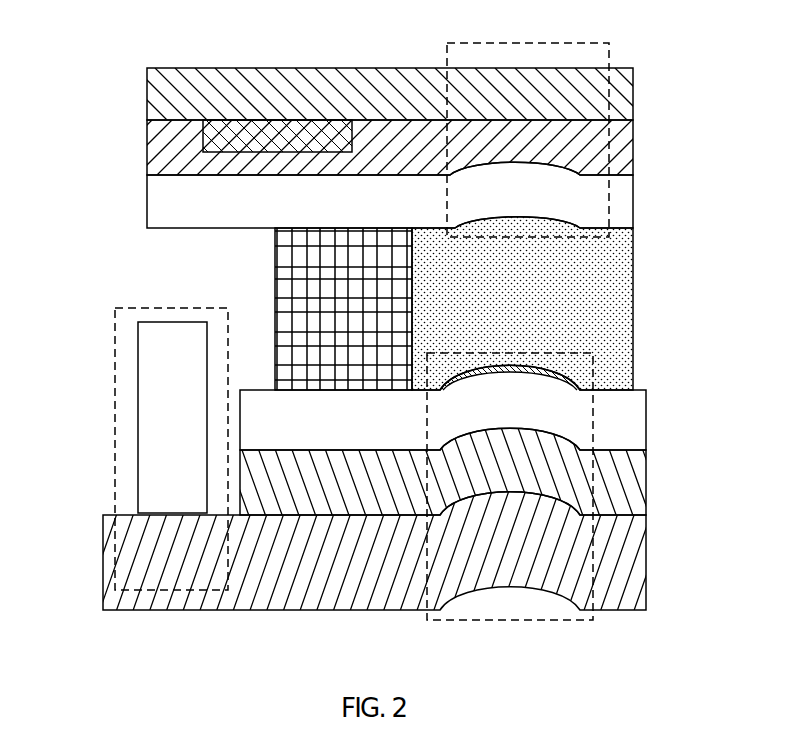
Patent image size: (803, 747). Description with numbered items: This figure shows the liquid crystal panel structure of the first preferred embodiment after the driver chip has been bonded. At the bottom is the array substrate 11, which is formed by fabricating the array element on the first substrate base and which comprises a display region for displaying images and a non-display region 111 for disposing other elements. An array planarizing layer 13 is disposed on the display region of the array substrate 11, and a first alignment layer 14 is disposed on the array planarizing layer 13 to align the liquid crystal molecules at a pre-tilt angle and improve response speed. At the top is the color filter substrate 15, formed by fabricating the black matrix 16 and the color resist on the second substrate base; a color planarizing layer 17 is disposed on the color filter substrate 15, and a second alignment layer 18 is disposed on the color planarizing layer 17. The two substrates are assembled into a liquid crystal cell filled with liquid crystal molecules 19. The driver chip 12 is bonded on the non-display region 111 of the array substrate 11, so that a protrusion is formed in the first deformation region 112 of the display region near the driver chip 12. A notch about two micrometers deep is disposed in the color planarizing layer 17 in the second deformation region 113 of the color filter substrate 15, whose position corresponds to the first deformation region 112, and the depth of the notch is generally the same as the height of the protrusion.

The array substrate 11 is at (646, 558).
The driver chip 12 is at (153, 402).
The array planarizing layer 13 is at (623, 498).
The first alignment layer 14 is at (623, 433).
The color filter substrate 15 is at (637, 80).
The black matrix 16 is at (276, 152).
The color planarizing layer 17 is at (637, 143).
The second alignment layer 18 is at (622, 212).
The liquid crystal molecules 19 is at (607, 312).
The non-display region 111 is at (125, 477).
The first deformation region 112 is at (600, 360).
The second deformation region 113 is at (578, 47).